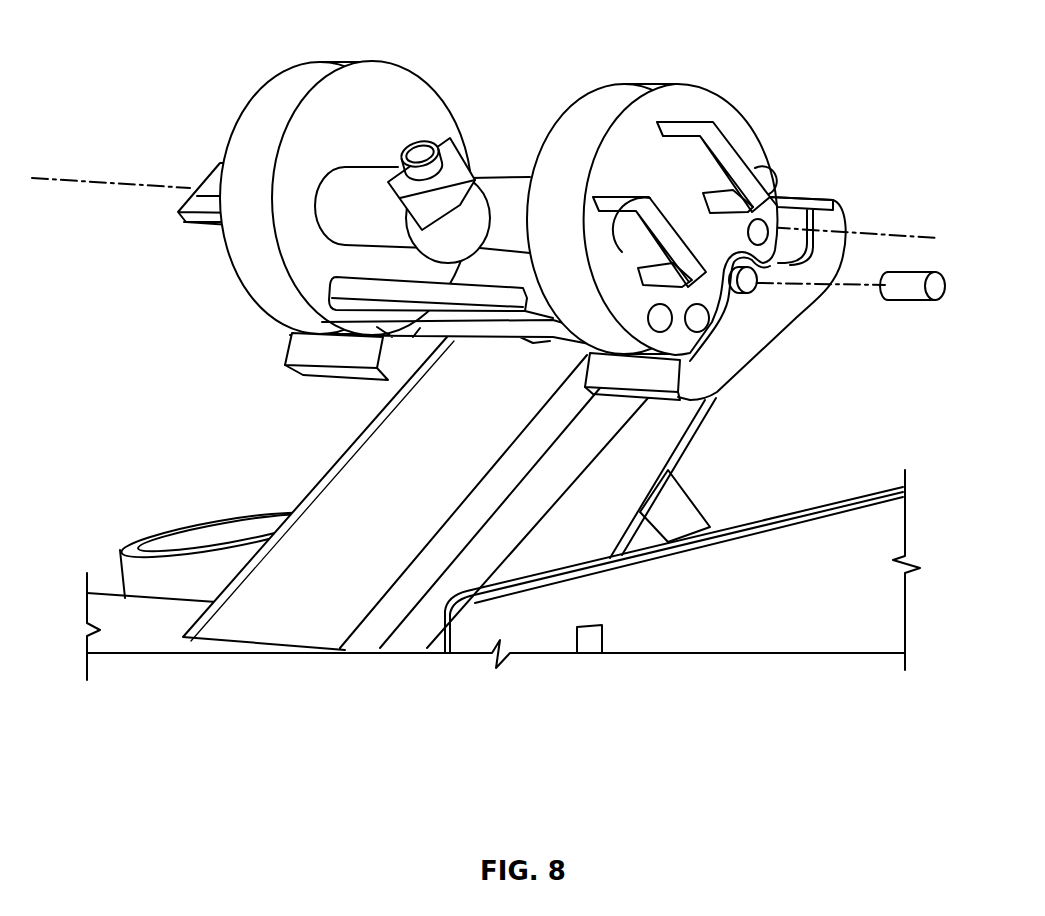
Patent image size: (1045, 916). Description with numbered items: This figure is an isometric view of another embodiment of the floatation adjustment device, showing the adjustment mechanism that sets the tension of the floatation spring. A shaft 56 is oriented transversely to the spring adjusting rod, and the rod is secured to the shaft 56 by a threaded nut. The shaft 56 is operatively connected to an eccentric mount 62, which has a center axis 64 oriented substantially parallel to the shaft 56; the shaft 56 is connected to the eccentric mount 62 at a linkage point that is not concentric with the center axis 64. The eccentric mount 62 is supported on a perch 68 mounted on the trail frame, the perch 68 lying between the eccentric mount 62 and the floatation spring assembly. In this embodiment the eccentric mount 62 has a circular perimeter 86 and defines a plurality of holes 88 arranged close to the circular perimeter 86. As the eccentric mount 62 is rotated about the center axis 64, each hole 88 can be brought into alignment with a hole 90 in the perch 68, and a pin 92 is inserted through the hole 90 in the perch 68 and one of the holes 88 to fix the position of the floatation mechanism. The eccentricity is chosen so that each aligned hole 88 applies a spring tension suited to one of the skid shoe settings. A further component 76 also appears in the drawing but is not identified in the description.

The shaft 56 is at (347, 193).
The eccentric mount 62 is at (657, 84).
The center axis 64 is at (893, 232).
The perch 68 is at (737, 357).
The beam 76 is at (457, 310).
The circular perimeter 86 is at (562, 118).
The holes 88 is at (772, 220).
The hole 90 is at (757, 281).
The pin 92 is at (913, 302).